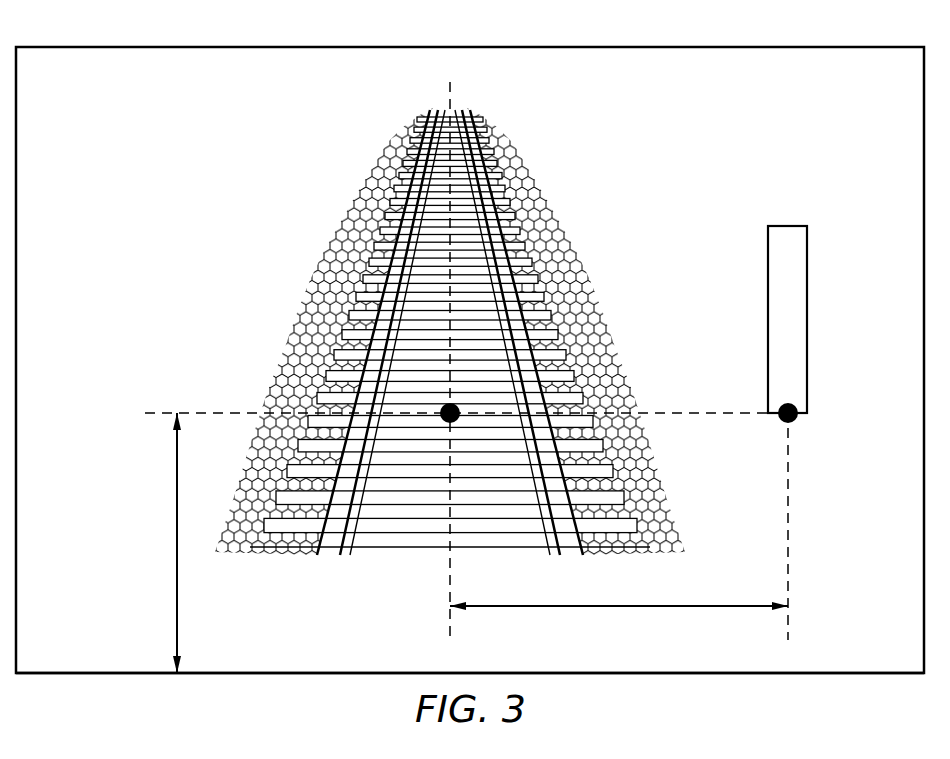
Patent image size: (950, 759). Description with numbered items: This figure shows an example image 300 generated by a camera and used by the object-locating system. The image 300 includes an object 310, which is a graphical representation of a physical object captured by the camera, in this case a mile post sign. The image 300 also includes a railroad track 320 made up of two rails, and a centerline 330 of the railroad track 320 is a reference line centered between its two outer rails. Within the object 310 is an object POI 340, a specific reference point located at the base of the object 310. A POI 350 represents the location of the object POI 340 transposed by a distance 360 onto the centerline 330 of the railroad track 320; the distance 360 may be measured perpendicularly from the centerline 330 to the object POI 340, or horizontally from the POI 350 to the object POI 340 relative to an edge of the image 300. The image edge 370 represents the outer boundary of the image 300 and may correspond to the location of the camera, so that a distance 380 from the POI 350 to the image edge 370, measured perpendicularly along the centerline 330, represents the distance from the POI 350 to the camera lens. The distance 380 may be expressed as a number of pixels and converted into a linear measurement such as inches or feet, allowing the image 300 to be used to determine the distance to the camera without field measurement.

The image 300 is at (170, 32).
The object 310 is at (768, 252).
The railroad track 320 is at (480, 183).
The centerline 330 is at (452, 82).
The object POI 340 is at (796, 420).
The POI 350 is at (445, 409).
The distance 360 is at (565, 607).
The image edge 370 is at (148, 673).
The distance 380 is at (177, 481).